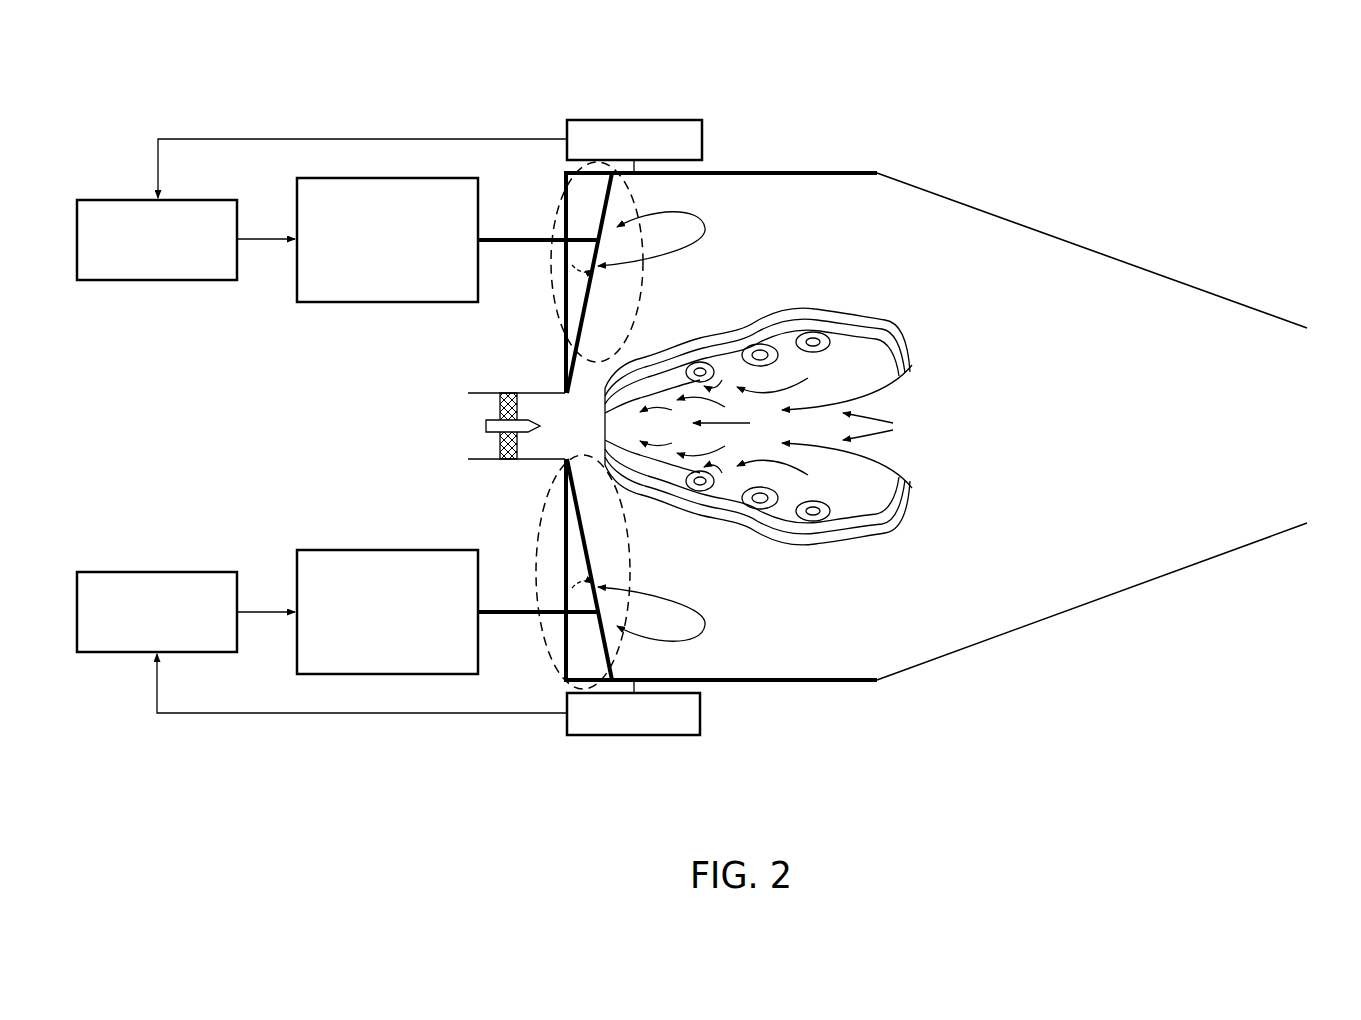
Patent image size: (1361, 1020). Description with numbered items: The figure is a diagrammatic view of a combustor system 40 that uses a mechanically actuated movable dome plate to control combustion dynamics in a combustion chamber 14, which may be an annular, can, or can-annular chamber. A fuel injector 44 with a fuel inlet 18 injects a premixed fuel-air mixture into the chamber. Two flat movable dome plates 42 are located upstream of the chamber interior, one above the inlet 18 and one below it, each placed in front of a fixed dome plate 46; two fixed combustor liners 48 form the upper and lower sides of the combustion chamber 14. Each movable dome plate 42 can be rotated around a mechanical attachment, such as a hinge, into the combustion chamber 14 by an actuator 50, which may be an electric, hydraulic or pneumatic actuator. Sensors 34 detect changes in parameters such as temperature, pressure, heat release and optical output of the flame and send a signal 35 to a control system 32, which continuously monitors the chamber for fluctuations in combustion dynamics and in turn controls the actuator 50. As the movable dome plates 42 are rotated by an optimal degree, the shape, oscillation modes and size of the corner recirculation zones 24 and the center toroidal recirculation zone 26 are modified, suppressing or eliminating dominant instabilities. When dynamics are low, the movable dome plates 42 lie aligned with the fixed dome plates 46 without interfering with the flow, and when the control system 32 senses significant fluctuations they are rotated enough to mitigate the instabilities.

The combustion chamber 14 is at (1103, 520).
The fuel inlet 18 is at (482, 427).
The corner recirculation zones 24 is at (636, 258).
The center toroidal recirculation zone 26 is at (856, 378).
The control system 32 is at (156, 280).
The sensors 34 is at (668, 120).
The signal 35 is at (339, 139).
The combustor system 40 is at (1258, 112).
The movable dome plate 42 is at (622, 177).
The fuel injector 44 is at (442, 374).
The fixed dome plate 46 is at (565, 220).
The fixed combustor liner 48 is at (740, 172).
The actuator 50 is at (318, 302).